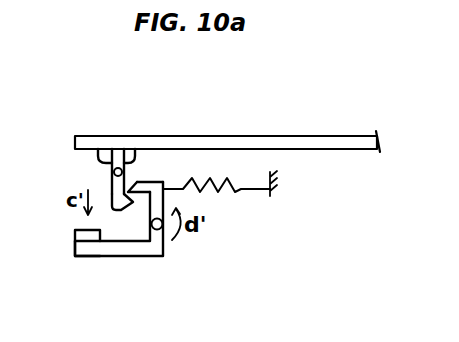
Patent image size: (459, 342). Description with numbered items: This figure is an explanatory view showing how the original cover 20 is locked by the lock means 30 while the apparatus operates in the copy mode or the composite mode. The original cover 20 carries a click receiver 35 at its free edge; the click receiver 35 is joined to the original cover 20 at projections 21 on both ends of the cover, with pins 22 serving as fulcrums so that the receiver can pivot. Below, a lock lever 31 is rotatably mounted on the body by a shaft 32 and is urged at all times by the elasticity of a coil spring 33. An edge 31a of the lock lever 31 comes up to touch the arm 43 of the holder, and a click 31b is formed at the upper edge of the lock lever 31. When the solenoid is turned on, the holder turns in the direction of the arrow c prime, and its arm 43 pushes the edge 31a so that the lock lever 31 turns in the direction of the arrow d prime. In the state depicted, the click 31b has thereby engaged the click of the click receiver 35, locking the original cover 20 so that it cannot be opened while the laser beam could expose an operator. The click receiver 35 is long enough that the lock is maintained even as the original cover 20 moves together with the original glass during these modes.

The original cover 20 is at (258, 136).
The projections 21 is at (97, 146).
The pins 22 is at (131, 161).
The lock means 30 is at (123, 206).
The lock lever 31 is at (137, 257).
The edge 31a is at (83, 257).
The click 31b is at (150, 182).
The shaft 32 is at (163, 232).
The coil spring 33 is at (235, 193).
The click receiver 35 is at (110, 200).
The arm 43 is at (75, 236).